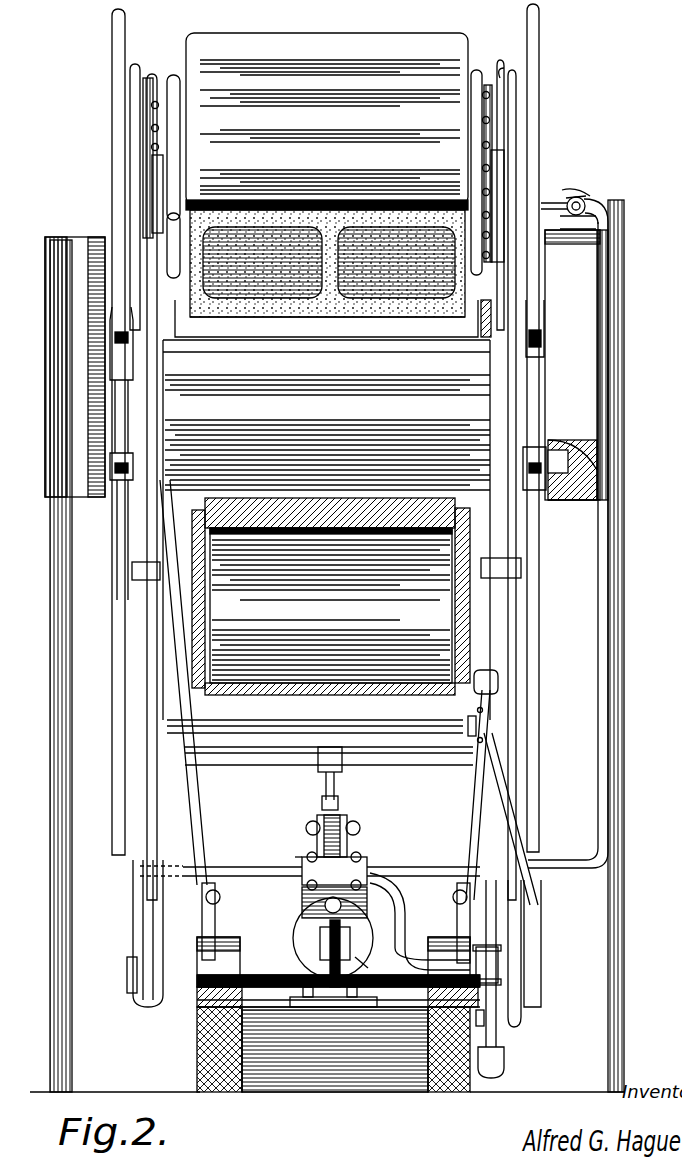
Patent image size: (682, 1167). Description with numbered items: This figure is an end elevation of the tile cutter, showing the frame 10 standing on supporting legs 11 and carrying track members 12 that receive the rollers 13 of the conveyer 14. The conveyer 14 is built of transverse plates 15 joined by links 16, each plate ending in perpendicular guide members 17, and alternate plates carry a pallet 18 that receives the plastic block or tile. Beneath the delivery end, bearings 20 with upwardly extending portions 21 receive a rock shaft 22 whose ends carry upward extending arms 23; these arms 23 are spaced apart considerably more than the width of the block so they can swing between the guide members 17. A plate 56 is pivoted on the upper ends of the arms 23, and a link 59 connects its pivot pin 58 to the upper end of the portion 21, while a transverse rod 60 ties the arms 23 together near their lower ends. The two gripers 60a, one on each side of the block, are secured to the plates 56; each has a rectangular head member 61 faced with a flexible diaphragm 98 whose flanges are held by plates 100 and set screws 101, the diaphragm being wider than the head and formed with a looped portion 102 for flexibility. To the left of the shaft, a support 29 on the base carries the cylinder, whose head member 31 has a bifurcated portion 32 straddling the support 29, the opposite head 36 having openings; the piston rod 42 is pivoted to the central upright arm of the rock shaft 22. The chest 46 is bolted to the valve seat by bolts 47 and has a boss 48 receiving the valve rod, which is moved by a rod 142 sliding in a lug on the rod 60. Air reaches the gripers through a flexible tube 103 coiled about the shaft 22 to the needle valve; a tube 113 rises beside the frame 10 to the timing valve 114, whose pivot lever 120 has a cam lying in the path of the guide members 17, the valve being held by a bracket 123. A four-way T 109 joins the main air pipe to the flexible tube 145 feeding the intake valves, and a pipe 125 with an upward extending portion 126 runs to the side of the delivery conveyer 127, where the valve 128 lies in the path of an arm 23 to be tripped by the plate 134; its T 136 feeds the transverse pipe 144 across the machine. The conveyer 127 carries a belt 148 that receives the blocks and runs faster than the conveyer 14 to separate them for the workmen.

The frame 10 is at (634, 332).
The supporting legs 11 is at (68, 866).
The track members 12 is at (560, 502).
The rollers 13 is at (562, 473).
The conveyer 14 is at (483, 393).
The transverse plates 15 is at (326, 527).
The links 16 is at (120, 378).
The guide members 17 is at (112, 152).
The pallet 18 is at (326, 185).
The bearings 20 is at (240, 938).
The upwardly extending portion 21 is at (215, 895).
The rock shaft 22 is at (338, 984).
The upward extending arm 23 is at (181, 830).
The support 29 is at (335, 990).
The head member 31 is at (295, 941).
The bifurcated portion 32 is at (374, 967).
The head 36 is at (373, 880).
The piston rod 42 is at (338, 818).
The chest 46 is at (334, 871).
The bolts 47 is at (300, 860).
The boss 48 is at (330, 910).
The plate 56 is at (160, 188).
The pivot pin 58 is at (500, 160).
The link 59 is at (193, 793).
The transverse rod 60 is at (390, 760).
The gripers 60a is at (342, 758).
The head members 61 is at (140, 96).
The diaphragm 98 is at (170, 72).
The plates 100 is at (492, 110).
The set screws 101 is at (500, 78).
The looped portion 102 is at (175, 98).
The flexible tube 103 is at (220, 866).
The T 109 is at (484, 1022).
The tube 113 is at (612, 646).
The timing valve 114 is at (588, 201).
The pivot lever 120 is at (586, 190).
The bracket 123 is at (594, 224).
The pipe 125 is at (498, 1066).
The upward extending portion 126 is at (498, 918).
The conveyer 127 is at (310, 538).
The valve 128 is at (498, 676).
The plate 134 is at (521, 570).
The T 136 is at (475, 722).
The rod 142 is at (340, 846).
The transverse pipe 144 is at (393, 724).
The flexible tube 145 is at (150, 888).
The belt 148 is at (360, 498).